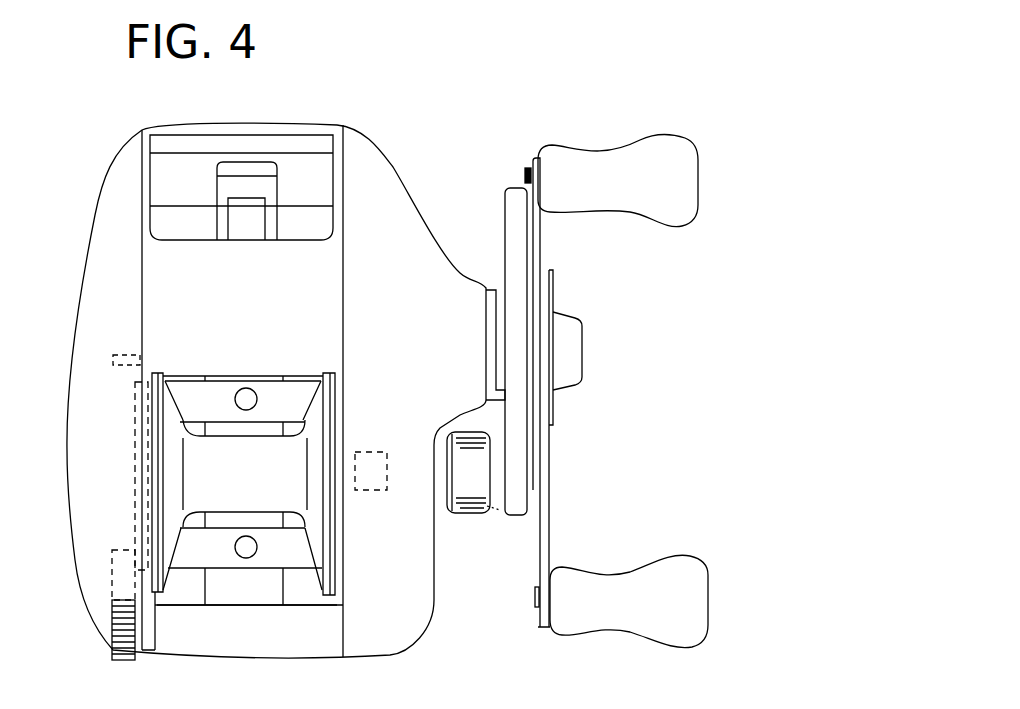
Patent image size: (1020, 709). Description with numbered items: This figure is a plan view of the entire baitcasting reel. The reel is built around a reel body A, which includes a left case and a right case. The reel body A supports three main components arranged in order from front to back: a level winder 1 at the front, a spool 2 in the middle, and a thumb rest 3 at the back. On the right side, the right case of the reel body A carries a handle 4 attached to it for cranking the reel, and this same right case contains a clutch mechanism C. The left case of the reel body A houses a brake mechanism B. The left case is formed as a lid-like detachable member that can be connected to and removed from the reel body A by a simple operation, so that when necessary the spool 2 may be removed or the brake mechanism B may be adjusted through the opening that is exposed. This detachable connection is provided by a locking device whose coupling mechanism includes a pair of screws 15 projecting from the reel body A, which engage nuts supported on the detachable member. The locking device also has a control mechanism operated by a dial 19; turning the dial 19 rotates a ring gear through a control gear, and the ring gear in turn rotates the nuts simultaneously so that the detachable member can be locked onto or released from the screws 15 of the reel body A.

The level winder 1 is at (273, 188).
The spool 2 is at (297, 462).
The thumb rest 3 is at (322, 632).
The handle 4 is at (542, 248).
The screws 15 is at (127, 355).
The dial 19 is at (112, 650).
The reel body A is at (405, 188).
The brake mechanism B is at (135, 422).
The clutch mechanism C is at (380, 490).